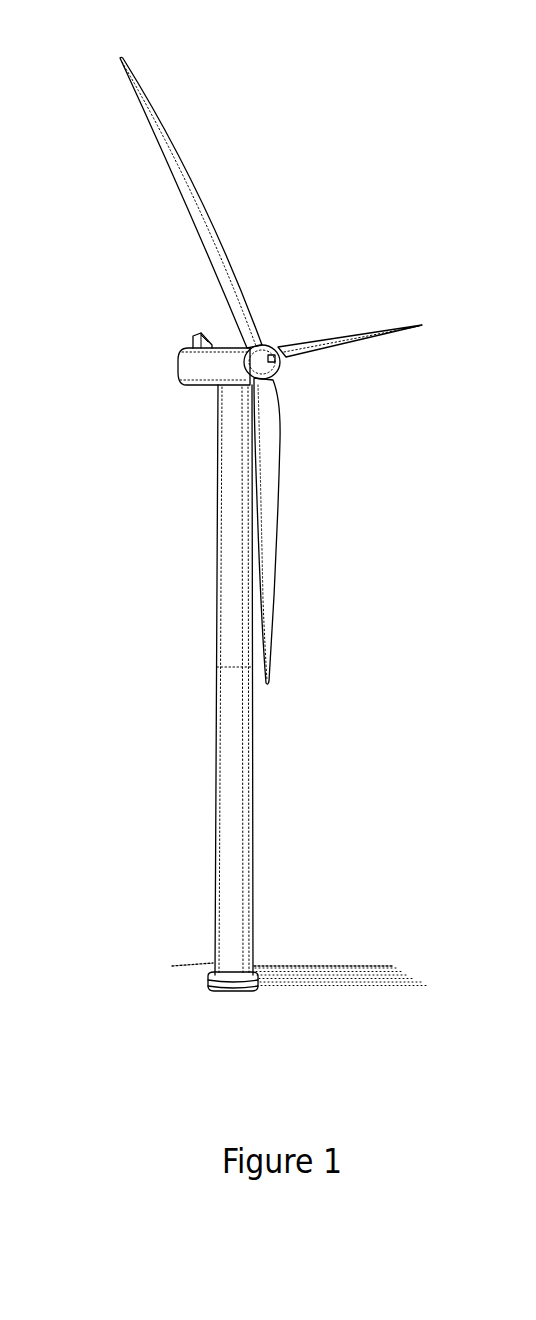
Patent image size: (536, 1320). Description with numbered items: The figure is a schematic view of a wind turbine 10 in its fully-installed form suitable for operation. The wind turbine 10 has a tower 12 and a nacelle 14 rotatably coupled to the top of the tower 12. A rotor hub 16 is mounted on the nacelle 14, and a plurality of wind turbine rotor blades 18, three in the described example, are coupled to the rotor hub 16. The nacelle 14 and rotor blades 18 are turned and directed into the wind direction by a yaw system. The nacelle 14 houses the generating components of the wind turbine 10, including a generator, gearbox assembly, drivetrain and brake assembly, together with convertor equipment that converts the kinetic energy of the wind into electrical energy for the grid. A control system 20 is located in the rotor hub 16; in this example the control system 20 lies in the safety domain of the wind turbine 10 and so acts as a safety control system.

The wind turbine 10 is at (122, 559).
The tower 12 is at (233, 884).
The nacelle 14 is at (182, 362).
The rotor hub 16 is at (276, 372).
The wind turbine rotor blade 18 is at (198, 193).
The control system 20 is at (275, 360).